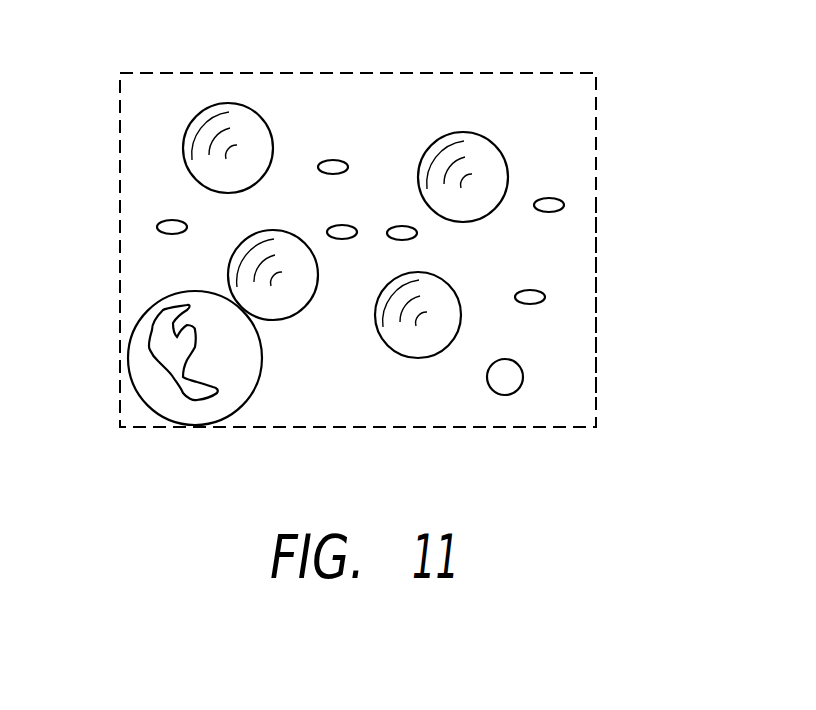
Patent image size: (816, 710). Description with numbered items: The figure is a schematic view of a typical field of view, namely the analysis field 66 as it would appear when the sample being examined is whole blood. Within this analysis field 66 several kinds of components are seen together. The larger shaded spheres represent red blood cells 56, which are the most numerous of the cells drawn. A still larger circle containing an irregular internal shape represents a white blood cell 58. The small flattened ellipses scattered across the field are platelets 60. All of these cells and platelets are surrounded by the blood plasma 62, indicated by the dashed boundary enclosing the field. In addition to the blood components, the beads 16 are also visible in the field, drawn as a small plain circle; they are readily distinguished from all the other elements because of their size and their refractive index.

The beads 16 is at (512, 393).
The red blood cells 56 is at (209, 105).
The white blood cells 58 is at (148, 310).
The platelets 60 is at (556, 196).
The blood plasma 62 is at (580, 113).
The analysis field 66 is at (605, 289).